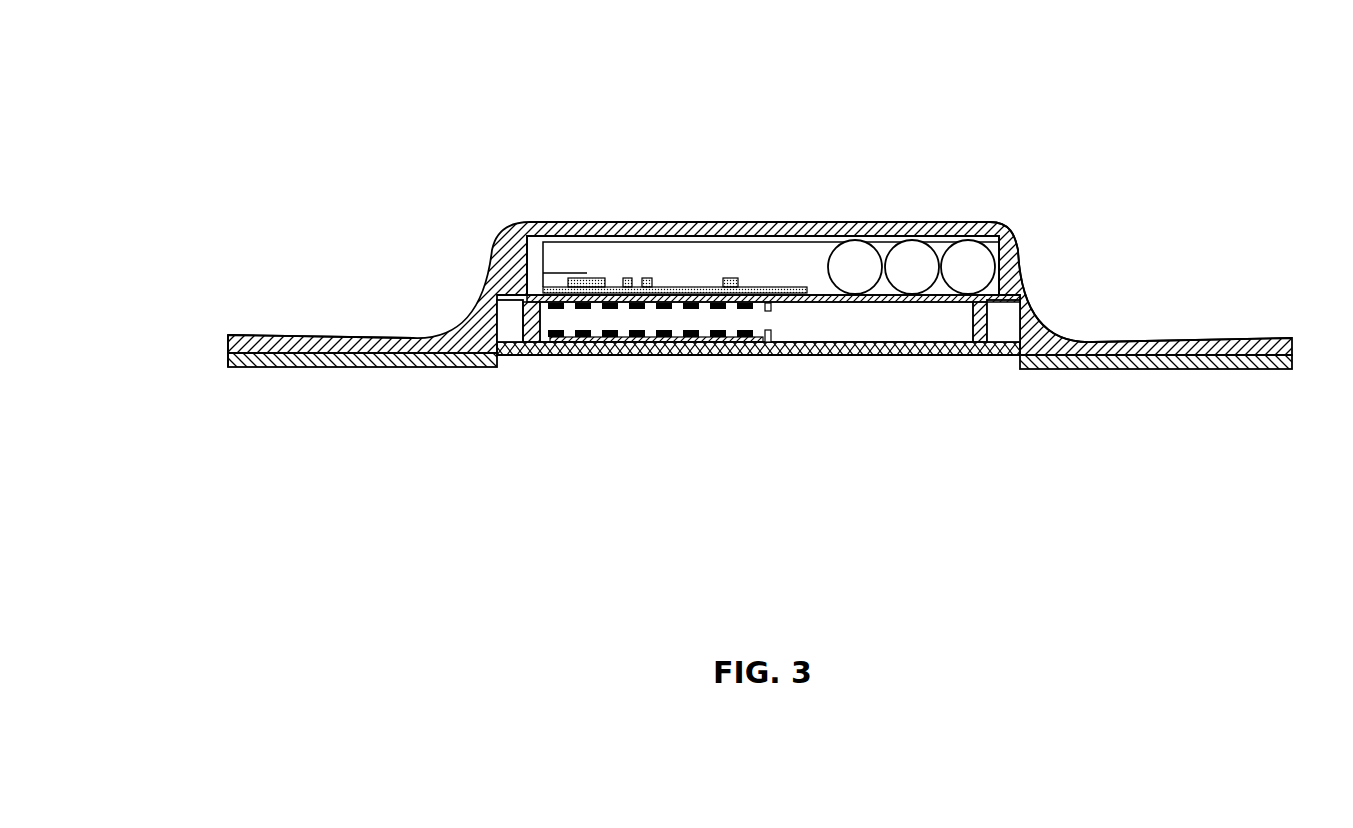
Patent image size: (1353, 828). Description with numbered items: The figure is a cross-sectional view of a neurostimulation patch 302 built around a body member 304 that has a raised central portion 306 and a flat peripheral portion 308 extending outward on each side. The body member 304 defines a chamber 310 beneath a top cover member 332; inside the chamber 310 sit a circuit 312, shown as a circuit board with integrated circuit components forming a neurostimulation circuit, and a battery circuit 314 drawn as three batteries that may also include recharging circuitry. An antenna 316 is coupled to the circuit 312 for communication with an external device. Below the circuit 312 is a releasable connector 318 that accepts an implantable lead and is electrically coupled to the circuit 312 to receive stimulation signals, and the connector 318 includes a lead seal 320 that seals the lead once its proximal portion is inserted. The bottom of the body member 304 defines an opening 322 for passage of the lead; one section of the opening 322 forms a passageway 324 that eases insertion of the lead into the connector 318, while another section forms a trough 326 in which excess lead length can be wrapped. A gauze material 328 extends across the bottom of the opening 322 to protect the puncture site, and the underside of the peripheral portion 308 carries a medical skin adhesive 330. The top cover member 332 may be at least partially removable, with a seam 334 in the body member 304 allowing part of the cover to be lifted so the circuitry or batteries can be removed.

The neurostimulation patch 302 is at (702, 275).
The body member 304 is at (702, 353).
The central portion 306 is at (760, 263).
The peripheral portion 308 is at (378, 337).
The chamber 310 is at (786, 267).
The circuit 312 is at (710, 287).
The battery circuit 314 is at (907, 262).
The antenna 316 is at (709, 243).
The releasable connector 318 is at (780, 322).
The lead seal 320 is at (767, 342).
The opening 322 is at (688, 355).
The passageway 324 is at (875, 320).
The trough 326 is at (512, 325).
The gauze material 328 is at (640, 353).
The medical skin adhesive 330 is at (397, 368).
The top cover member 332 is at (970, 230).
The seam 334 is at (1015, 235).